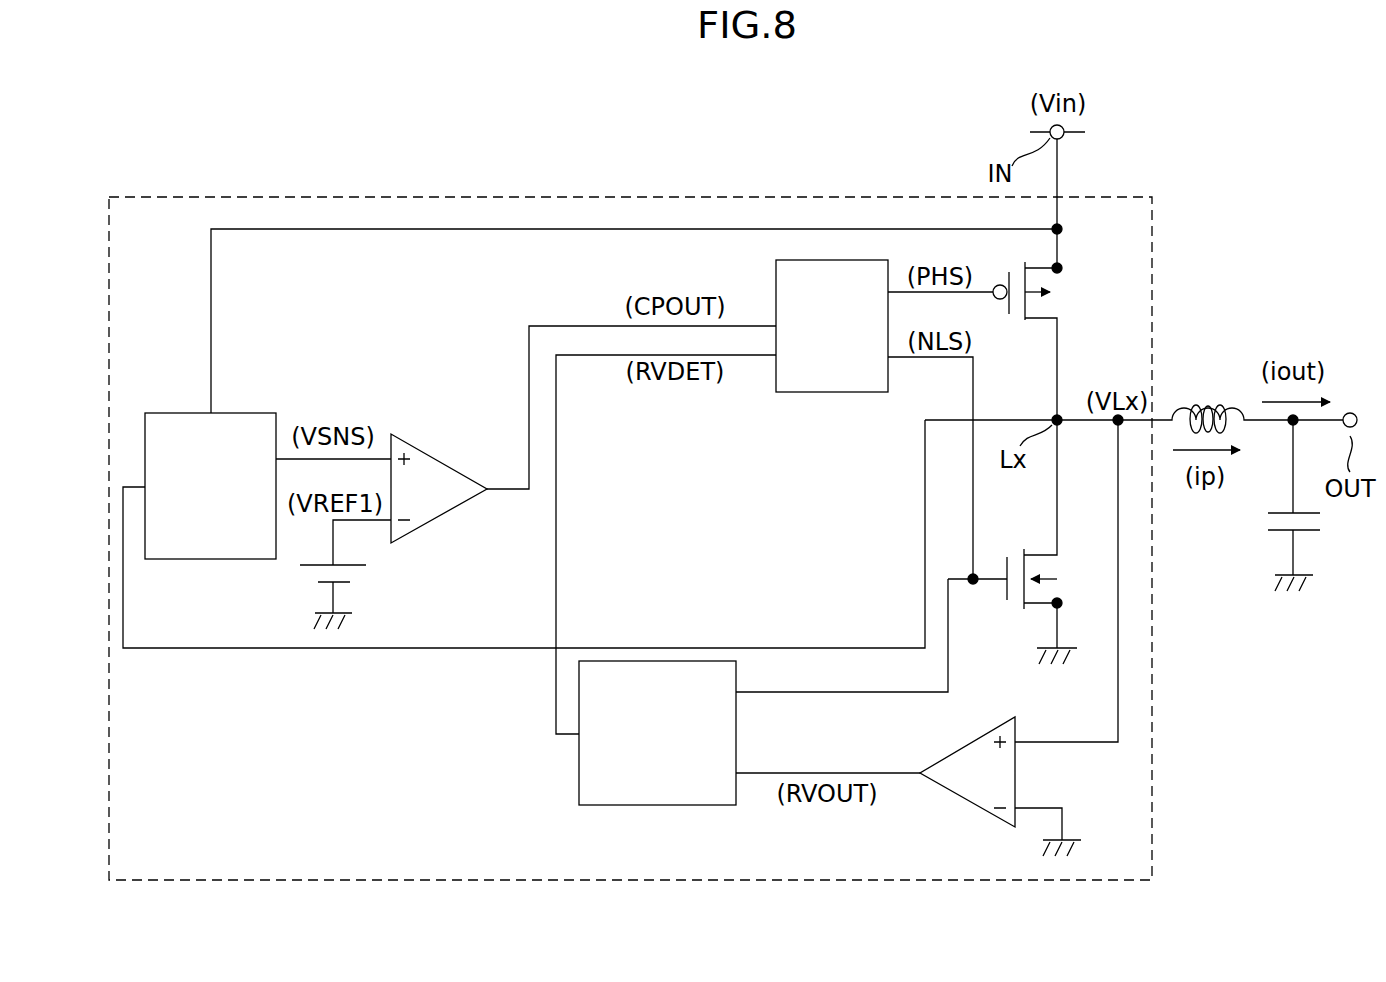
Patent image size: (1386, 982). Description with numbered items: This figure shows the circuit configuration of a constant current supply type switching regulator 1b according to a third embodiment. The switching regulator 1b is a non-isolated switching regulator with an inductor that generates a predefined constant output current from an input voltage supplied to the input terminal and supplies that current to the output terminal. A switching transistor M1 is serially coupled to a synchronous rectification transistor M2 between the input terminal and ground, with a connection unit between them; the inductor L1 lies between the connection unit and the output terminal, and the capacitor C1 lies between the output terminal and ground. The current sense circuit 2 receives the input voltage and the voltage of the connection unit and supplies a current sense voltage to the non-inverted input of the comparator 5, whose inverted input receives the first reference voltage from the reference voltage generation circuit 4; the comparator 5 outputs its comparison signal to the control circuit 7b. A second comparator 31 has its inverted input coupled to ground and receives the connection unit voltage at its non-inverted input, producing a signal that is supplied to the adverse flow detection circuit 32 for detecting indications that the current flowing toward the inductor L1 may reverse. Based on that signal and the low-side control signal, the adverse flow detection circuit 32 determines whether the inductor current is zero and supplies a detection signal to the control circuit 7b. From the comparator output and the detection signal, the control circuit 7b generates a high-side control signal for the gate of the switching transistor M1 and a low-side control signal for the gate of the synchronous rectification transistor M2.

The switching regulator 1b is at (1174, 168).
The current sense circuit 2 is at (208, 559).
The reference voltage generation circuit 4 is at (312, 567).
The comparator 5 is at (437, 520).
The control circuit 7b is at (849, 392).
The comparator 31 is at (962, 800).
The adverse flow detection circuit 32 is at (579, 790).
The switching transistor M1 is at (1048, 341).
The synchronous rectification transistor M2 is at (1042, 542).
The inductor L1 is at (1230, 400).
The capacitor C1 is at (1276, 505).